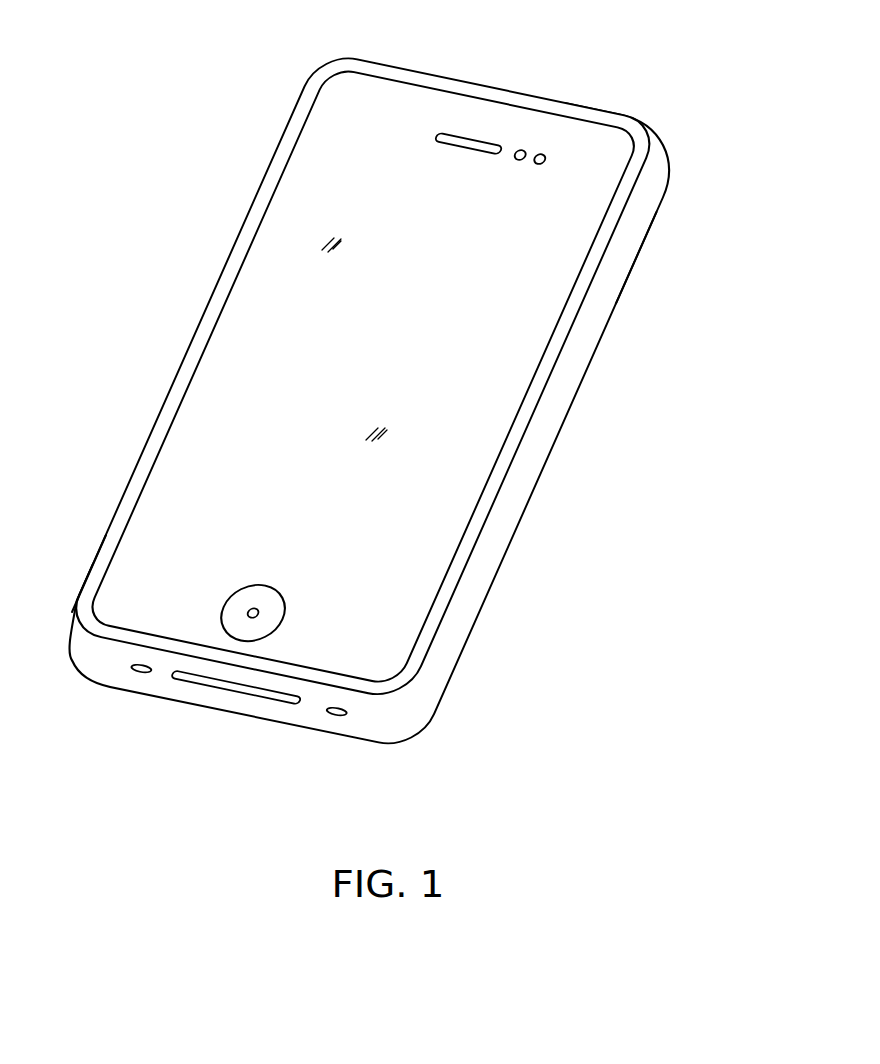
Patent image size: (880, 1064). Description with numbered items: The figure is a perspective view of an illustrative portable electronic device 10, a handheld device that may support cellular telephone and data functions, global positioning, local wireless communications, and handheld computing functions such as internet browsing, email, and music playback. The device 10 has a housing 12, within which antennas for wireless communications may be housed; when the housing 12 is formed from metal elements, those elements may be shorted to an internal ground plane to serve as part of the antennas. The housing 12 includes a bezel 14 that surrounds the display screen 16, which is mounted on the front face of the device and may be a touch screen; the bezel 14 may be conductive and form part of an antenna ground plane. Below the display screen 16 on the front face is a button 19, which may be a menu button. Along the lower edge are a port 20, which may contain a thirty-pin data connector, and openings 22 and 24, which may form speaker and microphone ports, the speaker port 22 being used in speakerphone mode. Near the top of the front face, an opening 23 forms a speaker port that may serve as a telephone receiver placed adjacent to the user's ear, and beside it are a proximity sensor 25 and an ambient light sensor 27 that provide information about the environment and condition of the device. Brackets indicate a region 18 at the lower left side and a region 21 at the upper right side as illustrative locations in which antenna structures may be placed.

The portable electronic device 10 is at (389, 413).
The housing 12 is at (493, 550).
The bezel 14 is at (213, 297).
The display screen 16 is at (570, 238).
The region 18 is at (100, 533).
The button 19 is at (245, 642).
The port 20 is at (273, 703).
The region 21 is at (686, 146).
The speaker port 22 is at (143, 673).
The speaker port 23 is at (457, 135).
The opening 24 is at (337, 718).
The proximity sensor 25 is at (523, 149).
The ambient light sensor 27 is at (547, 152).